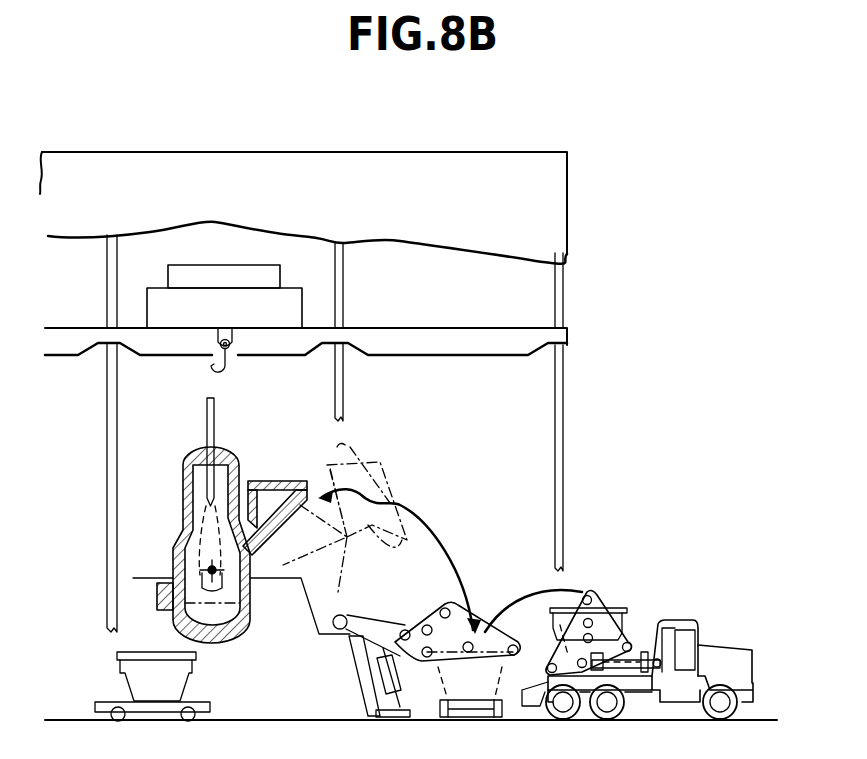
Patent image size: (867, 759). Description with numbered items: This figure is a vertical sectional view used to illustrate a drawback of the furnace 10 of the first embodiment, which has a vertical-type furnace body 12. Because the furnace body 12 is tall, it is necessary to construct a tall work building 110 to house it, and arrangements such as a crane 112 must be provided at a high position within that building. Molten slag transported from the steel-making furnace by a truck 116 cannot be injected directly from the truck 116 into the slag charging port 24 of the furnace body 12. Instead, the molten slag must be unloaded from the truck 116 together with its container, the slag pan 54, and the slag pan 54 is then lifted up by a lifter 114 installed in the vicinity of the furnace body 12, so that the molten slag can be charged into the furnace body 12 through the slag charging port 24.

The furnace 10 is at (218, 517).
The furnace body 12 is at (178, 496).
The slag charging port 24 is at (275, 567).
The slag pan 54 is at (140, 673).
The work building 110 is at (521, 140).
The crane 112 is at (312, 293).
The lifter 114 is at (472, 508).
The truck 116 is at (691, 592).